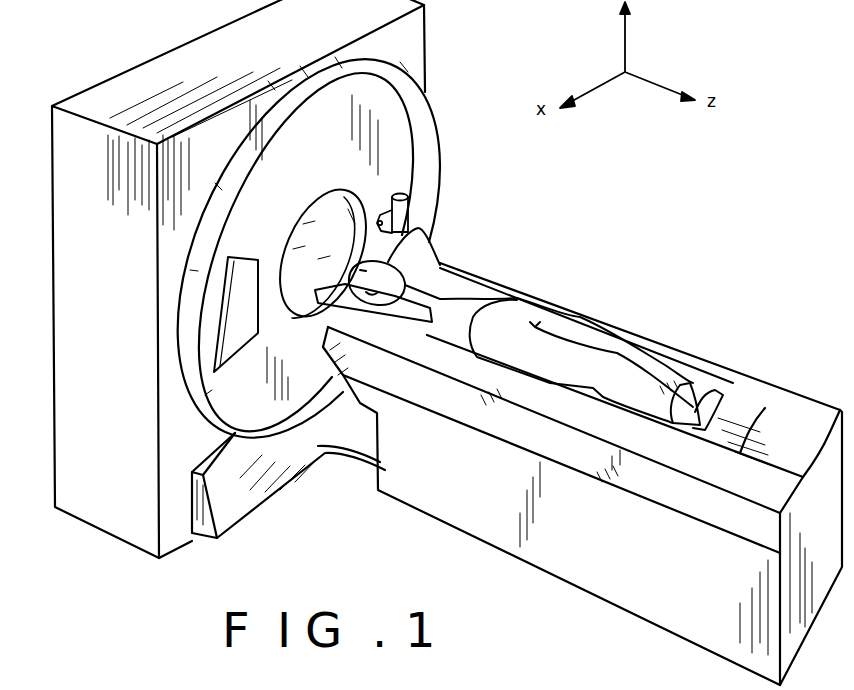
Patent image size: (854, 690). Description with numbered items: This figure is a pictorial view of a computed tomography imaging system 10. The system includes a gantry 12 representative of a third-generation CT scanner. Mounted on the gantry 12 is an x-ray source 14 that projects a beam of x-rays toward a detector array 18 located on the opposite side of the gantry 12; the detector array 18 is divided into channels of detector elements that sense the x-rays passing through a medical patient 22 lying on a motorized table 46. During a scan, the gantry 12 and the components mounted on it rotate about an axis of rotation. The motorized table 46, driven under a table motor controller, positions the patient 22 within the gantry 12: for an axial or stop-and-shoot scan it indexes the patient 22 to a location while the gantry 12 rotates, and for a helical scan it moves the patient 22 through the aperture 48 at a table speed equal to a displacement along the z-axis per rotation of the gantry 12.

The computed tomography imaging system 10 is at (350, 478).
The gantry 12 is at (84, 153).
The x-ray source 14 is at (410, 215).
The detector array 18 is at (232, 335).
The medical patient 22 is at (450, 295).
The motorized table 46 is at (458, 492).
The aperture 48 is at (322, 234).